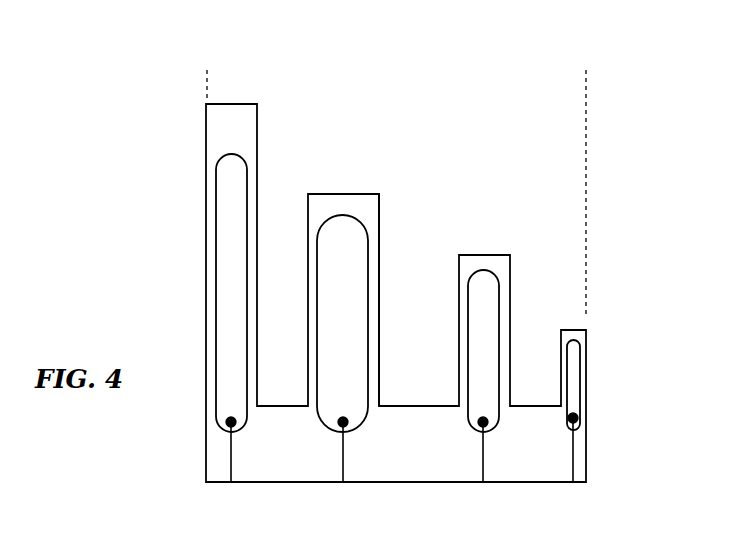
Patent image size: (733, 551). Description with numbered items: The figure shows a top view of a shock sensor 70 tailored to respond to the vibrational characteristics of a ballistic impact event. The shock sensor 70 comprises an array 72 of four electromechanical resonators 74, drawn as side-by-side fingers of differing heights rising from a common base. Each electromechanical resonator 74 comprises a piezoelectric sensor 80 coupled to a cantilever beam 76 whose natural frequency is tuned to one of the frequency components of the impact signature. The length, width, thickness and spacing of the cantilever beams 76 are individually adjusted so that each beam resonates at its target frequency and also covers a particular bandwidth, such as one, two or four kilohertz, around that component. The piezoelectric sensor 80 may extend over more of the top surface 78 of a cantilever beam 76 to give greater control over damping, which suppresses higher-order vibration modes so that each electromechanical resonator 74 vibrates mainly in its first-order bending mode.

The shock sensor 70 is at (623, 247).
The array 72 is at (586, 61).
The electromechanical resonator 74 is at (257, 155).
The cantilever beam 76 is at (492, 255).
The top surface 78 is at (365, 207).
The piezoelectric sensor 80 is at (357, 345).